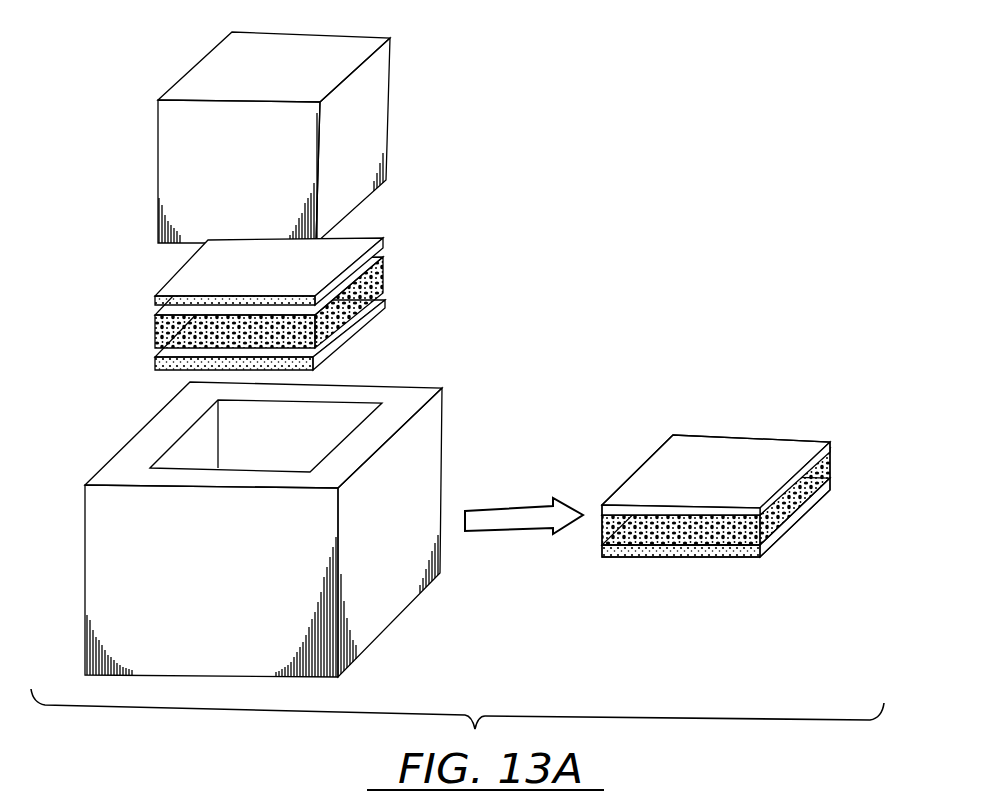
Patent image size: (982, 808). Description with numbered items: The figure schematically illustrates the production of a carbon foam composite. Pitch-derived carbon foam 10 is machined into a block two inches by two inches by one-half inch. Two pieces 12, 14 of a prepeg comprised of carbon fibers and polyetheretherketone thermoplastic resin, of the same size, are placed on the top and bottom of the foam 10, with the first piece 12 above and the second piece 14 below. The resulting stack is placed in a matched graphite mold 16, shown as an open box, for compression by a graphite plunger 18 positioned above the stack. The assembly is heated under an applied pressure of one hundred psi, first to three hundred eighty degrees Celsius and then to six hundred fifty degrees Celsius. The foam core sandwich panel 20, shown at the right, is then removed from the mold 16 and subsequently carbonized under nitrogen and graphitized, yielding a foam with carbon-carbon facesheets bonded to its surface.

The carbon foam 10 is at (155, 335).
The prepeg piece 12 is at (157, 300).
The prepeg piece 14 is at (152, 368).
The matched graphite mold 16 is at (85, 520).
The graphite plunger 18 is at (157, 137).
The foam core sandwich panel 20 is at (807, 425).